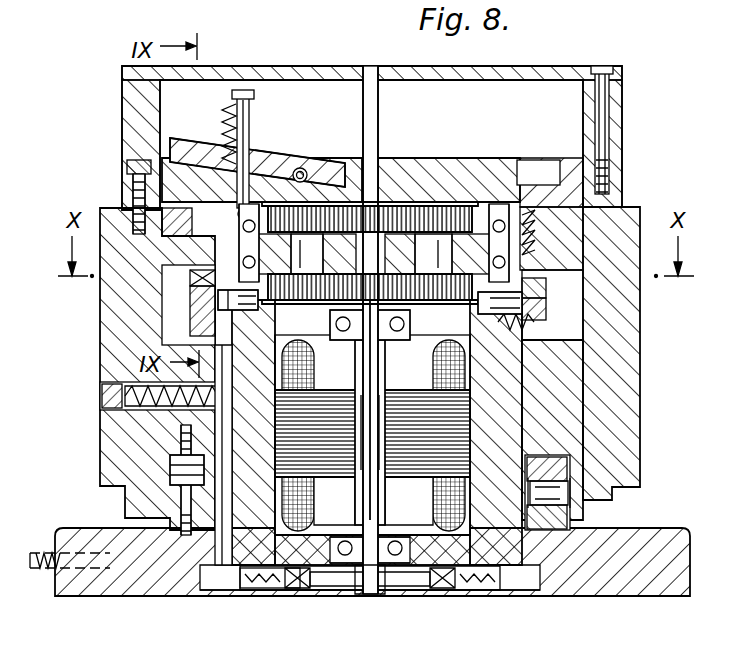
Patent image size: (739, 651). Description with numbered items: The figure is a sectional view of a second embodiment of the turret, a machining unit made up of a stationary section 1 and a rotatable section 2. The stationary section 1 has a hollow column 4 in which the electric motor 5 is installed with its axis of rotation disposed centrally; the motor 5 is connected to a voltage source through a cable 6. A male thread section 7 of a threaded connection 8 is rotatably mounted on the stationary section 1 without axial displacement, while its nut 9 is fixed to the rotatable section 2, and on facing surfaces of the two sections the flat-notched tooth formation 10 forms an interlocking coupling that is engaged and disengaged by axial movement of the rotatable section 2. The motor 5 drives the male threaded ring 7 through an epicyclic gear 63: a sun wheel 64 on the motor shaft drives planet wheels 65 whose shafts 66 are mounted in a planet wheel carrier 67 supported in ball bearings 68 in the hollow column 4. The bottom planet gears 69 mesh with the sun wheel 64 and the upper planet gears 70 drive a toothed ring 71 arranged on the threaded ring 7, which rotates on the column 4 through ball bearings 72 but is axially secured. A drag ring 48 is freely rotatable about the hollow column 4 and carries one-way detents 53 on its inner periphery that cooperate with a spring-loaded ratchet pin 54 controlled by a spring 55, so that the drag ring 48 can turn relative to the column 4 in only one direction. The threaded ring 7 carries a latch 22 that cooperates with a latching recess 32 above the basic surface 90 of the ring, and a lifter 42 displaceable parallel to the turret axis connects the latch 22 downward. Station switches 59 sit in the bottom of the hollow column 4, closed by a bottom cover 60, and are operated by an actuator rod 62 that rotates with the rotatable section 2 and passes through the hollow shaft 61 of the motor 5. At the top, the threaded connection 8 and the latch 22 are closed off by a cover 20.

The stationary section 1 is at (578, 590).
The rotatable section 2 is at (630, 324).
The hollow column 4 is at (494, 438).
The electric motor 5 is at (446, 455).
The cable 6 is at (48, 560).
The male thread section 7 is at (457, 208).
The threaded connection 8 is at (562, 186).
The nut 9 is at (612, 200).
The flat-notched tooth formation 10 is at (552, 494).
The cover 20 is at (125, 102).
The latch 22 is at (214, 152).
The latching recess 32 is at (128, 165).
The lifter 42 is at (134, 195).
The drag ring 48 is at (546, 288).
The one-way detents 53 is at (546, 311).
The spring-loaded ratchet pin 54 is at (518, 344).
The spring 55 is at (504, 336).
The station switches 59 is at (300, 588).
The bottom cover 60 is at (395, 592).
The hollow shaft 61 is at (422, 344).
The actuator rod 62 is at (378, 97).
The epicyclic gear 63 is at (258, 310).
The sun wheel 64 is at (350, 340).
The planet wheels 65 is at (354, 172).
The shafts 66 is at (322, 206).
The planet wheel carrier 67 is at (394, 206).
The ball bearings 68 is at (512, 258).
The bottom planet gears 69 is at (272, 338).
The upper planet gears 70 is at (430, 208).
The toothed ring 71 is at (478, 222).
The ball bearings 72 is at (503, 220).
The basic surface 90 is at (257, 168).